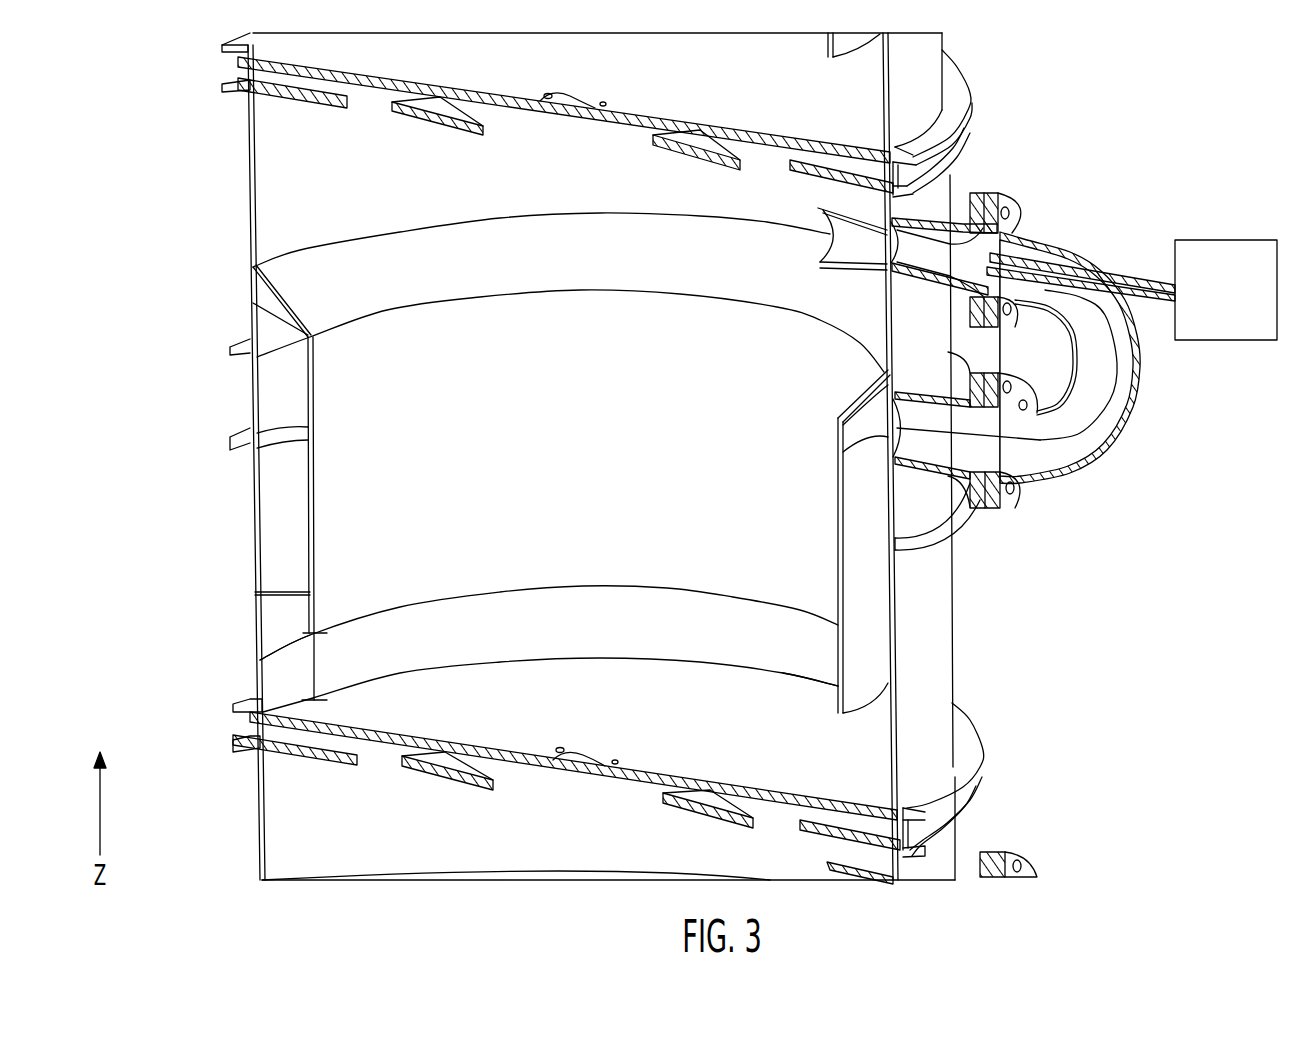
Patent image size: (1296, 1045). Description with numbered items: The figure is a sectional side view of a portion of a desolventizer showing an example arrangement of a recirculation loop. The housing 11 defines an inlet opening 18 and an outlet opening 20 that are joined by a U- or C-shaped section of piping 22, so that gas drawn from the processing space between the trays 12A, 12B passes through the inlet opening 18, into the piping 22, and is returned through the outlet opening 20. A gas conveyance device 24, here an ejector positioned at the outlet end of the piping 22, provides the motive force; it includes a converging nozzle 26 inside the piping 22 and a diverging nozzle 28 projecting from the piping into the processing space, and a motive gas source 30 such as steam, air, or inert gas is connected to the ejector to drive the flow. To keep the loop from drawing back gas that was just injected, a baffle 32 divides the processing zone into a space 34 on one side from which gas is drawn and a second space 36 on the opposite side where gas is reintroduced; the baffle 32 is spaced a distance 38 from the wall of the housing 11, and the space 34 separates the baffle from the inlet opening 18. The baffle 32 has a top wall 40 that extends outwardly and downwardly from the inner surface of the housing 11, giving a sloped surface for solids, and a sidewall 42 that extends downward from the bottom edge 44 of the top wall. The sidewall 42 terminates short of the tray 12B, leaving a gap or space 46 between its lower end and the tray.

The housing 11 is at (250, 158).
The tray 12A is at (860, 152).
The tray 12B is at (862, 795).
The inlet opening 18 is at (840, 450).
The outlet opening 20 is at (893, 223).
The piping 22 is at (1055, 480).
The gas conveyance device 24 is at (944, 288).
The converging nozzle 26 is at (975, 262).
The diverging nozzle 28 is at (828, 238).
The motive gas source 30 is at (1215, 305).
The baffle 32 is at (805, 696).
The space 34 is at (262, 410).
The second space 36 is at (324, 515).
The distance 38 is at (292, 591).
The top wall 40 is at (592, 257).
The sidewall 42 is at (534, 429).
The bottom edge 44 is at (253, 303).
The space 46 is at (260, 660).